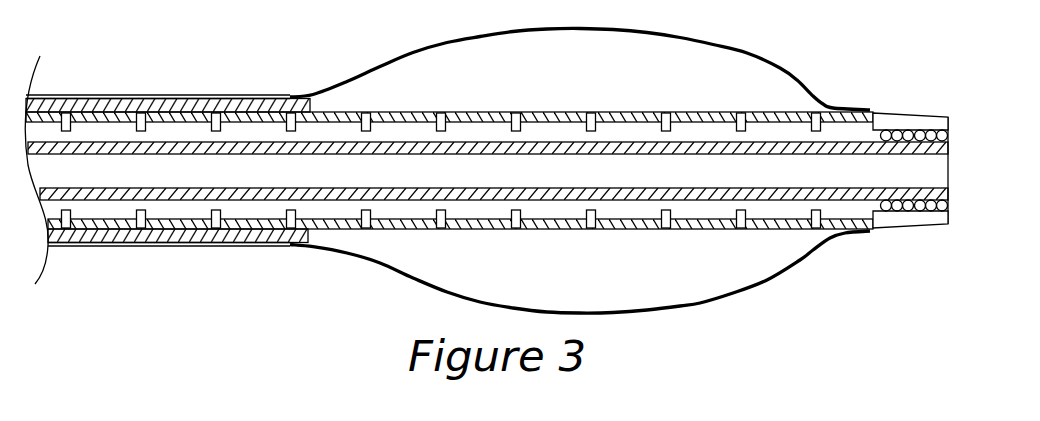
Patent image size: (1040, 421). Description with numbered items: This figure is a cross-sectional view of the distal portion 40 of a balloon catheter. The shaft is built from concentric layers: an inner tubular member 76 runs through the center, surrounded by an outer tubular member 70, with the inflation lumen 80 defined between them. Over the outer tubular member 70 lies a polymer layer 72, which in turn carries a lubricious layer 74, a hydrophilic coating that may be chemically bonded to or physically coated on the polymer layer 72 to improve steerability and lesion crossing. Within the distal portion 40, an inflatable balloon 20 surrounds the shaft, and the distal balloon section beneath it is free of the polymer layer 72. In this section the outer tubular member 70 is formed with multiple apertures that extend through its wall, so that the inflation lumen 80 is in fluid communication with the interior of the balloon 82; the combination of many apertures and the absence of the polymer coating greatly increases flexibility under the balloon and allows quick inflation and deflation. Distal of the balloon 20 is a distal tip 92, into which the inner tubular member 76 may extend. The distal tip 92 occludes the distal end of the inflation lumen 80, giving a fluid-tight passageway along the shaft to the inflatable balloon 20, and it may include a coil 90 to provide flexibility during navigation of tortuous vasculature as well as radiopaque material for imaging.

The inflatable balloon 20 is at (443, 48).
The distal portion 40 is at (857, 301).
The outer tubular member 70 is at (173, 115).
The polymer layer 72 is at (188, 235).
The lubricious layer 74 is at (100, 247).
The inner tubular member 76 is at (108, 148).
The inflation lumen 80 is at (253, 210).
The interior of the balloon 82 is at (727, 277).
The coil 90 is at (953, 207).
The distal tip 92 is at (943, 120).